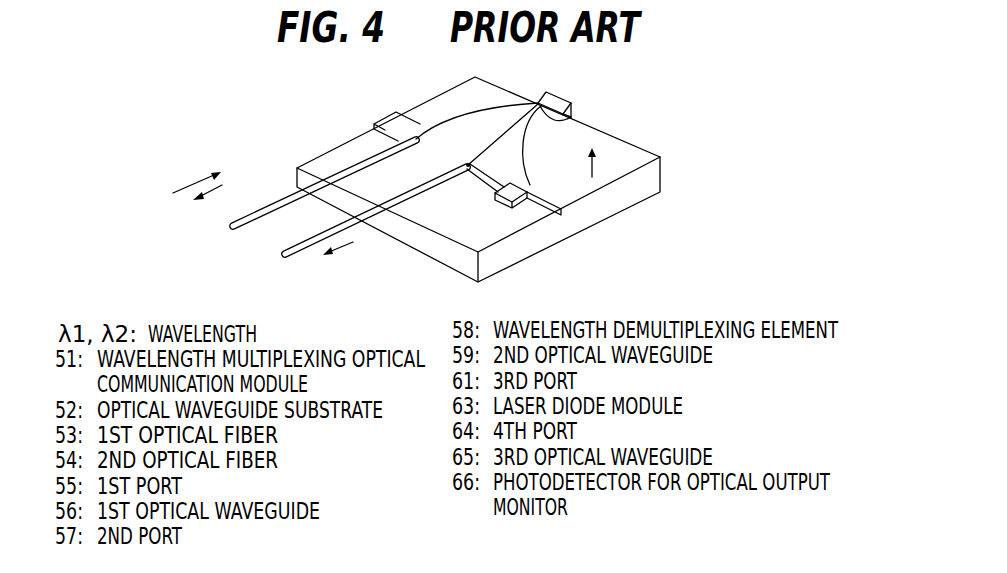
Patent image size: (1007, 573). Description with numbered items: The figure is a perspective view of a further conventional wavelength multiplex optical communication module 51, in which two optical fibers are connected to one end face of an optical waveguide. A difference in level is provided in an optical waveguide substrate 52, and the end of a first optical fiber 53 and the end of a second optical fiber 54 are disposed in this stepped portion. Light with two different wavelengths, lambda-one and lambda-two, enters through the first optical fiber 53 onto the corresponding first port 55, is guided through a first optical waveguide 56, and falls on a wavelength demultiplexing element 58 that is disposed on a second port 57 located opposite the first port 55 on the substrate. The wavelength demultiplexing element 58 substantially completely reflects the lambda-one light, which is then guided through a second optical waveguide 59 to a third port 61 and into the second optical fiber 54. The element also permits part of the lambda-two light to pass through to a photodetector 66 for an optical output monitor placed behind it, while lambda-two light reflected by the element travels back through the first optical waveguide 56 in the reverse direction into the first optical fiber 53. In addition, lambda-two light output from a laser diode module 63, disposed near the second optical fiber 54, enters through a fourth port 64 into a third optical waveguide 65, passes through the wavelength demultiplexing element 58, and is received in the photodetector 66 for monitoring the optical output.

The wavelength multiplex optical communication module 51 is at (331, 83).
The optical waveguide substrate 52 is at (593, 226).
The first optical fiber 53 is at (263, 220).
The second optical fiber 54 is at (303, 255).
The first port 55 is at (417, 130).
The first optical waveguide 56 is at (457, 120).
The second port 57 is at (567, 112).
The wavelength demultiplexing element 58 is at (557, 91).
The second optical waveguide 59 is at (488, 139).
The third port 61 is at (472, 166).
The laser diode module 63 is at (498, 204).
The fourth port 64 is at (529, 186).
The third optical waveguide 65 is at (530, 154).
The photodetector for optical output monitor 66 is at (581, 82).